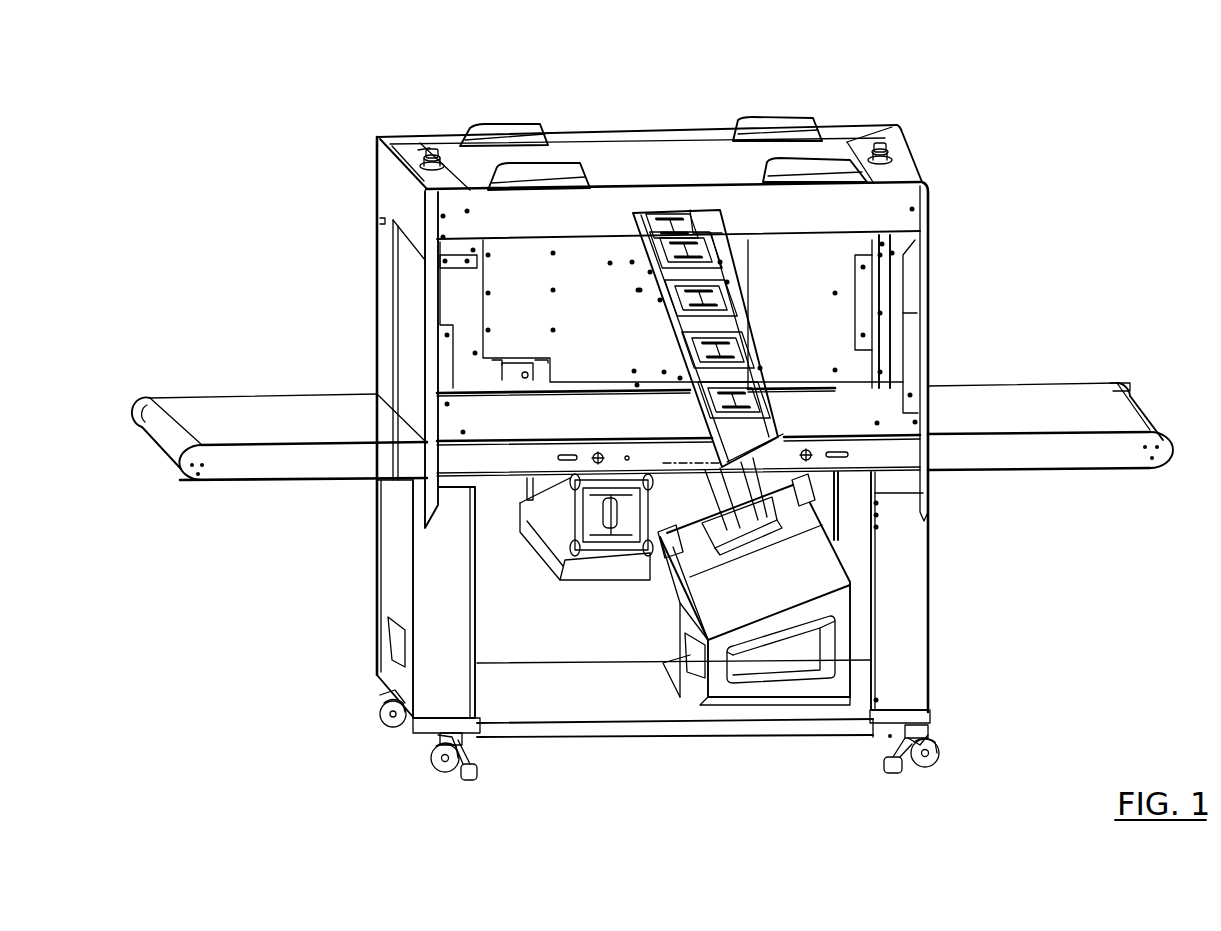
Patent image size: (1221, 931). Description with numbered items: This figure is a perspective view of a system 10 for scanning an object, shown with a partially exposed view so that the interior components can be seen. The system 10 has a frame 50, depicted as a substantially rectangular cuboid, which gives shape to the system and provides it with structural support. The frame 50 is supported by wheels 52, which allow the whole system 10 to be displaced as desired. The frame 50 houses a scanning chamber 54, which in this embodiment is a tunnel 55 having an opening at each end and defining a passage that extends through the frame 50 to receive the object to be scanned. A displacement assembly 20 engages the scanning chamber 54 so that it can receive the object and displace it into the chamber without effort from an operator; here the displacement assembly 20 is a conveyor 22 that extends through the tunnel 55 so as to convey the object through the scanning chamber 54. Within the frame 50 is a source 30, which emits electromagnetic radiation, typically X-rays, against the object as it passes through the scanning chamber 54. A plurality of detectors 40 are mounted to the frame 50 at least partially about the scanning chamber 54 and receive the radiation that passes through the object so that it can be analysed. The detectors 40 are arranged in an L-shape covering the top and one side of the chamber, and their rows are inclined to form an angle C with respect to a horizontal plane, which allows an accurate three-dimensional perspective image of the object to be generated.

The system 10 is at (962, 92).
The displacement assembly 20 is at (188, 397).
The conveyor 22 is at (284, 403).
The source 30 is at (848, 559).
The detectors 40 is at (757, 388).
The frame 50 is at (951, 212).
The wheels 52 is at (385, 722).
The scanning chamber 54 is at (363, 349).
The tunnel 55 is at (410, 303).
The angle C is at (676, 463).